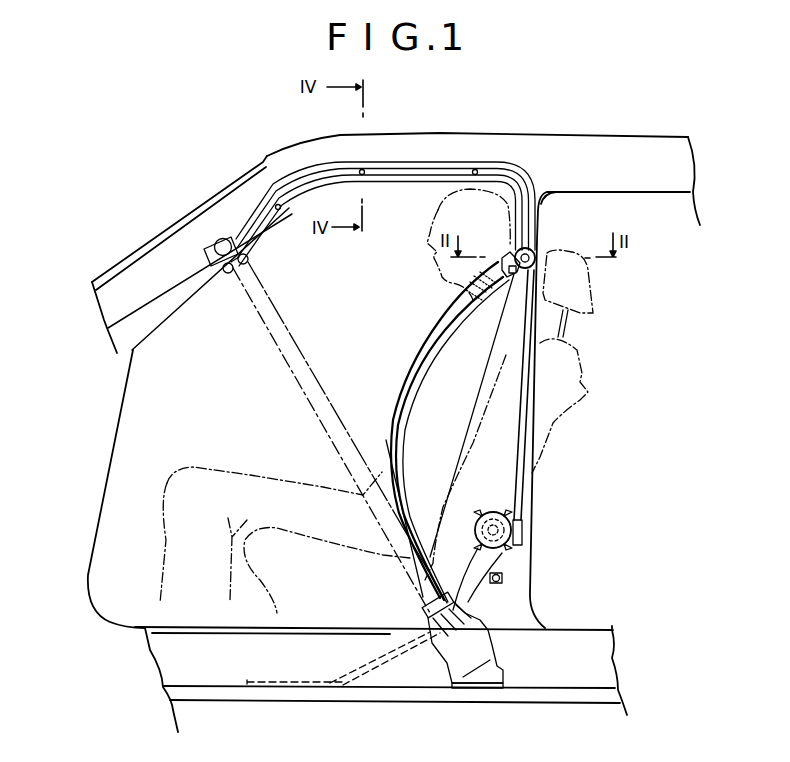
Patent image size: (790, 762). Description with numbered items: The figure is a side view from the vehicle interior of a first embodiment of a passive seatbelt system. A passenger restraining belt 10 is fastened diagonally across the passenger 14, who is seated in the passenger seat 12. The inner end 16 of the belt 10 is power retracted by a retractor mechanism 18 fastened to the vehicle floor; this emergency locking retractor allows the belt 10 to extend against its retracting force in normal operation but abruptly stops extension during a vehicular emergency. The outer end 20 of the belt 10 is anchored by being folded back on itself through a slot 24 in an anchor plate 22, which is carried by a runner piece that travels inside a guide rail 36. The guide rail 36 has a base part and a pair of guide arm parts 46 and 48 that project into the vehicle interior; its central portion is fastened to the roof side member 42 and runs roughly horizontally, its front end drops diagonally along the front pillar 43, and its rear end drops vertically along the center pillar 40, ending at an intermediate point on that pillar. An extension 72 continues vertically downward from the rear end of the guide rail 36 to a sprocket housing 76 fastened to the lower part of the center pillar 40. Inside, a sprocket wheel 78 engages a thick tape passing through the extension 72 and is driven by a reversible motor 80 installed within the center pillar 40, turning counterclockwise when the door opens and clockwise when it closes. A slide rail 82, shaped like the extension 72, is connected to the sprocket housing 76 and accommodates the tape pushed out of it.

The passenger restraining belt 10 is at (309, 363).
The passenger seat 12 is at (583, 390).
The passenger 14 is at (417, 380).
The inner end 16 is at (421, 593).
The retractor mechanism 18 is at (492, 655).
The outer end 20 is at (248, 268).
The anchor plate 22 is at (505, 242).
The slot 24 is at (503, 278).
The guide rail 36 is at (527, 167).
The center pillar 40 is at (548, 228).
The roof side member 42 is at (398, 186).
The front pillar 43 is at (180, 310).
The guide arm part 46 is at (553, 197).
The guide arm part 48 is at (507, 198).
The extension 72 is at (513, 443).
The sprocket housing 76 is at (485, 510).
The sprocket wheel 78 is at (523, 518).
The reversible motor 80 is at (493, 572).
The slide rail 82 is at (479, 592).